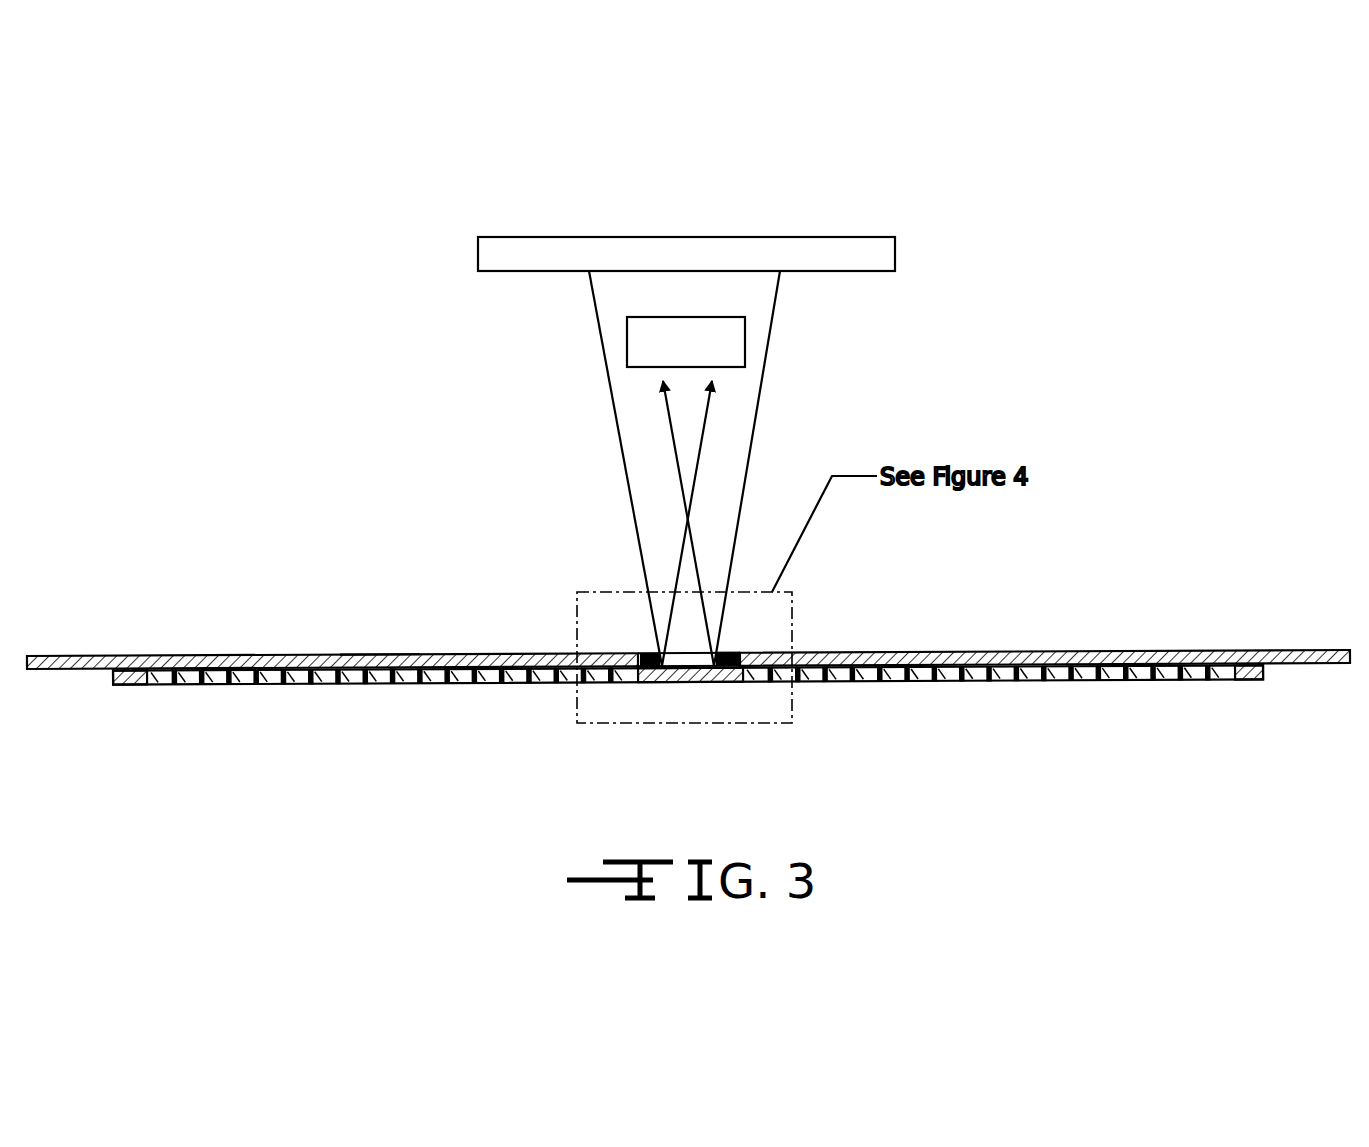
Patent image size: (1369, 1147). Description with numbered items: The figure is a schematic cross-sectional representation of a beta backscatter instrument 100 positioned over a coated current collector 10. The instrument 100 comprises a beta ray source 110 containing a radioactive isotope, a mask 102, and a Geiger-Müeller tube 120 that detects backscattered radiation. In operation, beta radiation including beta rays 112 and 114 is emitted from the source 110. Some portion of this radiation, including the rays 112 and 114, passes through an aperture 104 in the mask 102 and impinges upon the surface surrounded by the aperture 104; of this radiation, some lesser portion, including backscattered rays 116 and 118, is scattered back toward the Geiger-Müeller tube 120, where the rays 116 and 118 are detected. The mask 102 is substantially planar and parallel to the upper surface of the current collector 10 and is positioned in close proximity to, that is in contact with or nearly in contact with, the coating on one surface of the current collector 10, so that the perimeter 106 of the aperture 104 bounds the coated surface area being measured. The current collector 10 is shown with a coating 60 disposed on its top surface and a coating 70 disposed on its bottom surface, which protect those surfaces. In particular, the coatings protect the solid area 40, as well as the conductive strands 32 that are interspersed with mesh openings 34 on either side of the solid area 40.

The current collector 10 is at (688, 665).
The conductive strands 32 is at (197, 685).
The mesh openings 34 is at (978, 683).
The solid area 40 is at (690, 683).
The coating 60 is at (378, 654).
The coating 70 is at (688, 719).
The beta backscatter instrument 100 is at (436, 252).
The mask 102 is at (688, 600).
The aperture 104 is at (737, 647).
The perimeter 106 is at (641, 652).
The beta ray source 110 is at (898, 250).
The beta ray 112 is at (600, 331).
The beta ray 114 is at (773, 318).
The backscattered ray 116 is at (705, 428).
The backscattered ray 118 is at (668, 417).
The Geiger-Müeller tube 120 is at (661, 317).